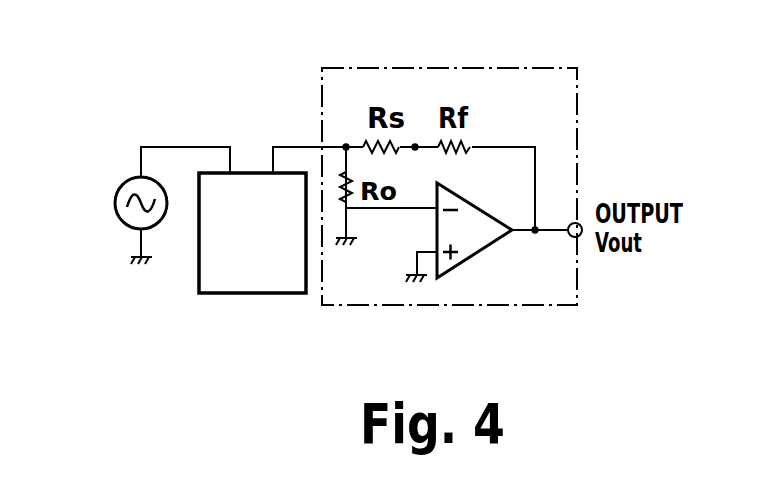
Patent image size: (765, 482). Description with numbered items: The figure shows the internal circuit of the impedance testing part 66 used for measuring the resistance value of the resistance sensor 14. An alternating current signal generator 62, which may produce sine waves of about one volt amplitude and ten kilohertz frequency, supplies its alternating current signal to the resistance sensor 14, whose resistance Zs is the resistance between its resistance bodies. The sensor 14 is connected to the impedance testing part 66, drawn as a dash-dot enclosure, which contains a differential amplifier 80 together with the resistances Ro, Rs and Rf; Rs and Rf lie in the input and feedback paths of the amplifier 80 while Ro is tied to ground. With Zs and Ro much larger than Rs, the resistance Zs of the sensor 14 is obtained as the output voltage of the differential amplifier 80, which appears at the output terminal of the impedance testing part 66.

The alternating current signal generator 62 is at (118, 188).
The resistance sensor 14 is at (228, 294).
The impedance testing part 66 is at (508, 62).
The differential amplifier 80 is at (477, 253).